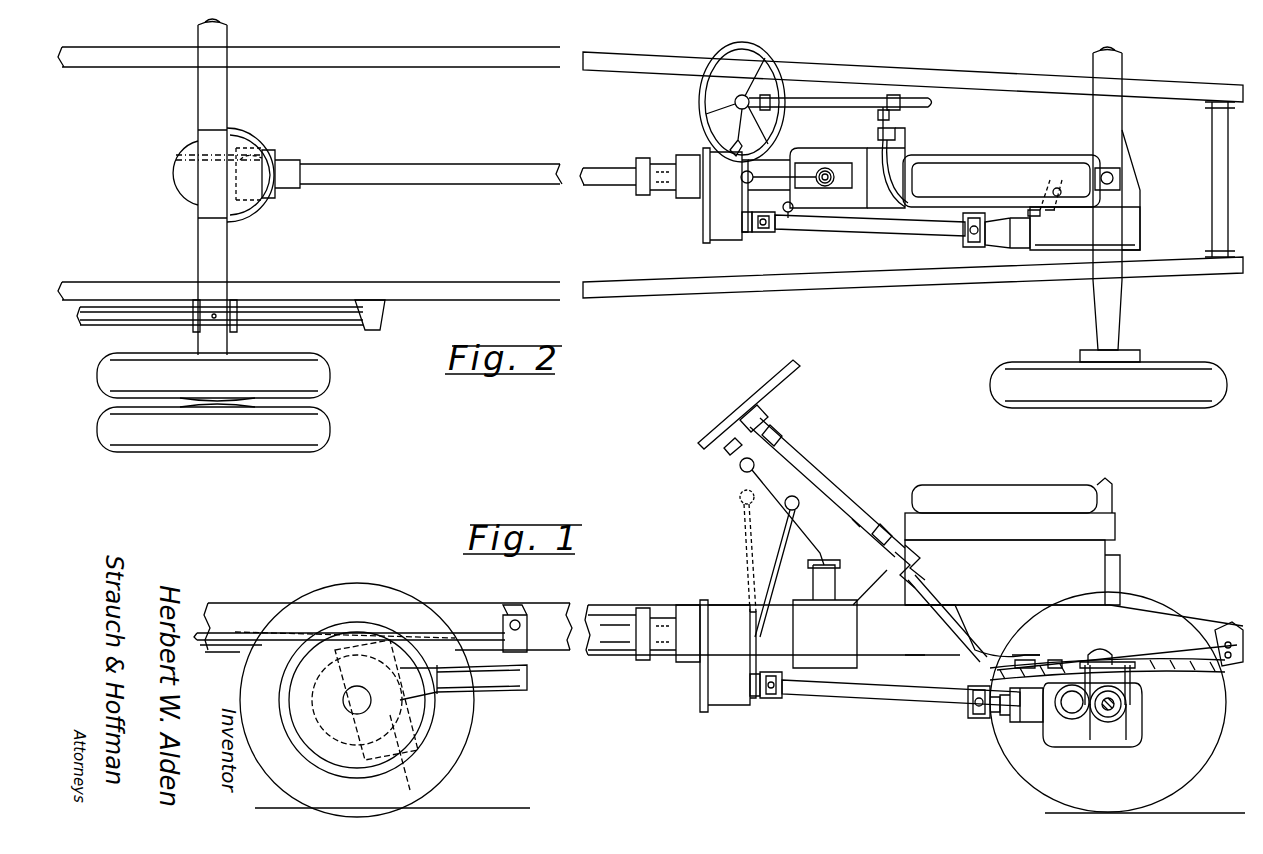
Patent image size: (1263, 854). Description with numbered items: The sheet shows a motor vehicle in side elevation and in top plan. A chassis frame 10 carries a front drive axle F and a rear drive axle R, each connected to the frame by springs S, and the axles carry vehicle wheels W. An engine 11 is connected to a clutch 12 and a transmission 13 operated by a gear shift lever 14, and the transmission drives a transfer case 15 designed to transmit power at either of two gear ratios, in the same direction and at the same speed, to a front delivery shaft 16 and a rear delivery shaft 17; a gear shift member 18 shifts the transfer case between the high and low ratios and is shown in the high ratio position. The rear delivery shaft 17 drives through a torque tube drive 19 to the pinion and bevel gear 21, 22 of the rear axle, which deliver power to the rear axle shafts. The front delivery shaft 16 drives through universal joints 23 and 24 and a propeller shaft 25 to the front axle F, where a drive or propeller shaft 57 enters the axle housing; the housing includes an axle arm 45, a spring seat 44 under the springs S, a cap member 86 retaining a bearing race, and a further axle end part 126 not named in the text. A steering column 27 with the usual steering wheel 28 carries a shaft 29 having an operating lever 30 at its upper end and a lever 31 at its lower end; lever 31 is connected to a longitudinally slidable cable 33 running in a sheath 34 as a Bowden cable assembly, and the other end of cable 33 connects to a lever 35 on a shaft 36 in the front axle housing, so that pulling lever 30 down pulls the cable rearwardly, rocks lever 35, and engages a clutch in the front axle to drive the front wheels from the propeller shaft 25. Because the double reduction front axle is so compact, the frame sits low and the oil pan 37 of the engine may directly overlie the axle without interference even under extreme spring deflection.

In FIG. 2, the chassis frame 10 is at (890, 285).
In FIG. 1, the chassis frame 10 is at (877, 660).
In FIG. 2, the engine 11 is at (995, 166).
In FIG. 1, the engine 11 is at (1010, 572).
In FIG. 2, the clutch 12 is at (880, 145).
In FIG. 1, the clutch 12 is at (890, 660).
In FIG. 2, the transmission 13 is at (812, 154).
In FIG. 1, the transmission 13 is at (832, 682).
In FIG. 2, the gear shift lever 14 is at (741, 178).
In FIG. 1, the gear shift lever 14 is at (740, 470).
In FIG. 2, the transfer case 15 is at (720, 236).
In FIG. 1, the transfer case 15 is at (735, 712).
In FIG. 2, the front delivery shaft 16 is at (754, 232).
In FIG. 1, the front delivery shaft 16 is at (752, 700).
In FIG. 2, the rear delivery shaft 17 is at (672, 192).
In FIG. 1, the rear delivery shaft 17 is at (680, 656).
In FIG. 2, the gear shift member 18 is at (789, 213).
In FIG. 1, the gear shift member 18 is at (770, 580).
In FIG. 2, the torque tube drive 19 is at (486, 188).
In FIG. 1, the torque tube drive 19 is at (517, 692).
In FIG. 2, the differential ring gear 21 is at (240, 133).
In FIG. 2, the pinion 22 is at (252, 166).
In FIG. 2, the universal joint 23 is at (768, 233).
In FIG. 1, the universal joint 23 is at (770, 702).
In FIG. 2, the universal joint 24 is at (970, 242).
In FIG. 1, the universal joint 24 is at (976, 718).
In FIG. 2, the propeller shaft 25 is at (868, 230).
In FIG. 1, the propeller shaft 25 is at (905, 704).
In FIG. 2, the steering column 27 is at (842, 98).
In FIG. 1, the steering column 27 is at (795, 440).
In FIG. 2, the steering wheel 28 is at (757, 54).
In FIG. 1, the steering wheel 28 is at (715, 420).
In FIG. 1, the shaft 29 is at (852, 517).
In FIG. 2, the operating lever 30 is at (737, 146).
In FIG. 1, the operating lever 30 is at (727, 450).
In FIG. 2, the lever 31 is at (890, 110).
In FIG. 1, the lever 31 is at (898, 564).
In FIG. 2, the cable 33 is at (1032, 210).
In FIG. 1, the cable 33 is at (1036, 652).
In FIG. 2, the sheath 34 is at (905, 188).
In FIG. 2, the lever 35 is at (1060, 198).
In FIG. 1, the lever 35 is at (1056, 662).
In FIG. 2, the shaft 36 is at (1085, 170).
In FIG. 1, the oil pan 37 is at (1095, 648).
In FIG. 1, the spring seat 44 is at (1132, 694).
In FIG. 1, the axle arm 45 is at (1106, 718).
In FIG. 1, the drive or propeller shaft 57 is at (1022, 720).
In FIG. 1, the cap member 86 is at (1072, 712).
In FIG. 1, the axle shaft end 126 is at (1126, 706).
In FIG. 2, the rear drive axle R is at (228, 240).
In FIG. 1, the rear drive axle R is at (392, 760).
In FIG. 2, the front drive axle F is at (1113, 324).
In FIG. 1, the front drive axle F is at (1122, 735).
In FIG. 2, the springs S is at (336, 300).
In FIG. 1, the springs S is at (462, 630).
In FIG. 2, the vehicle wheels W is at (328, 418).
In FIG. 1, the vehicle wheels W is at (448, 762).